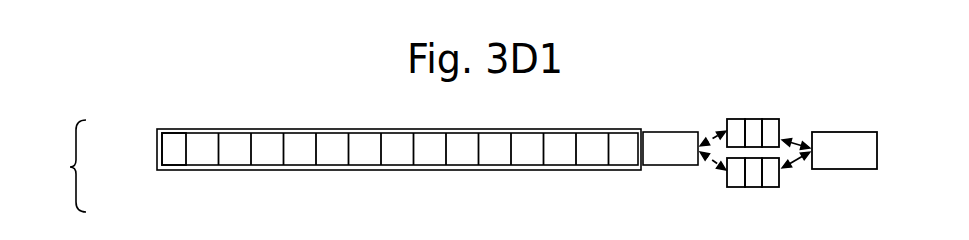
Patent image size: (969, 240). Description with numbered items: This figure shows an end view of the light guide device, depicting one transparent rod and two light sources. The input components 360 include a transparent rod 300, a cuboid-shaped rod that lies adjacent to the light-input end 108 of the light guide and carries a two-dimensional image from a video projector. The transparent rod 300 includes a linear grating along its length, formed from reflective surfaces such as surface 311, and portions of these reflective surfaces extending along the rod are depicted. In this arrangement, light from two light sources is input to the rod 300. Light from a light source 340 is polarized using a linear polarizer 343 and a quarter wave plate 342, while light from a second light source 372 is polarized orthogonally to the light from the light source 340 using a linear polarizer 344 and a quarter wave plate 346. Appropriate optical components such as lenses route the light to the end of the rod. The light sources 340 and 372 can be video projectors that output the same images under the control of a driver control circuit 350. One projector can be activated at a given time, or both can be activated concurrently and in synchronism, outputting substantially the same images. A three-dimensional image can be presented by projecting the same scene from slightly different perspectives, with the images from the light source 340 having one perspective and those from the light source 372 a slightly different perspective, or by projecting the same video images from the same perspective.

The input components 360 is at (58, 166).
The transparent rod 300 is at (151, 155).
The reflective surface 311 is at (187, 146).
The light-input end 108 is at (492, 128).
The quarter wave plate 342 is at (739, 118).
The linear polarizer 343 is at (756, 118).
The light source 340 is at (770, 118).
The quarter wave plate 346 is at (739, 188).
The linear polarizer 344 is at (755, 188).
The light source 372 is at (770, 188).
The driver control circuit 350 is at (844, 150).